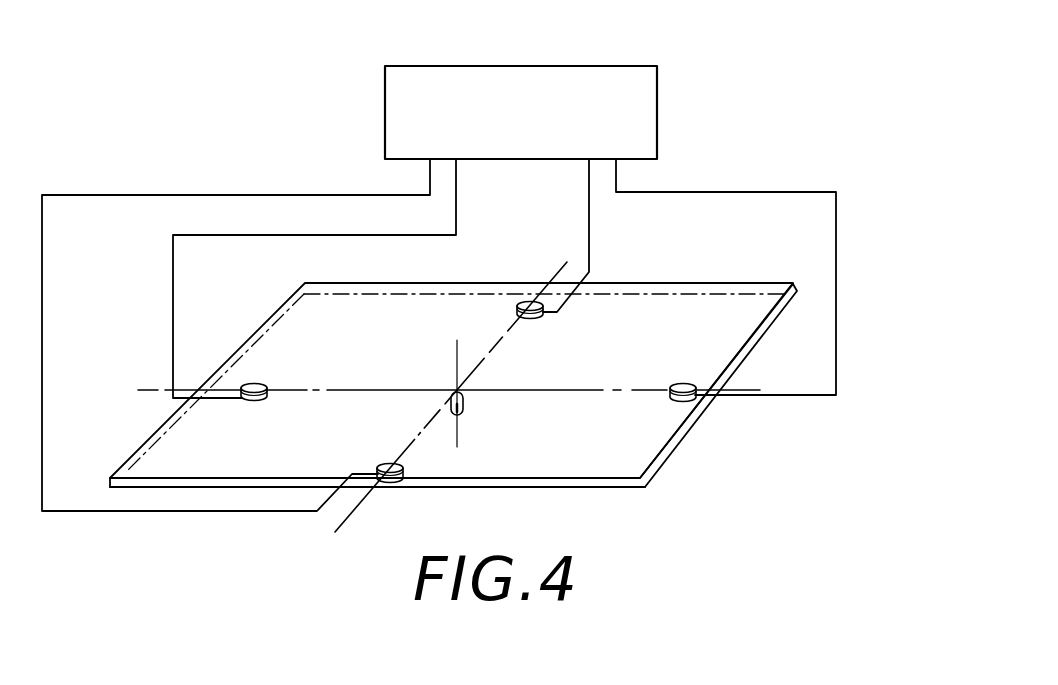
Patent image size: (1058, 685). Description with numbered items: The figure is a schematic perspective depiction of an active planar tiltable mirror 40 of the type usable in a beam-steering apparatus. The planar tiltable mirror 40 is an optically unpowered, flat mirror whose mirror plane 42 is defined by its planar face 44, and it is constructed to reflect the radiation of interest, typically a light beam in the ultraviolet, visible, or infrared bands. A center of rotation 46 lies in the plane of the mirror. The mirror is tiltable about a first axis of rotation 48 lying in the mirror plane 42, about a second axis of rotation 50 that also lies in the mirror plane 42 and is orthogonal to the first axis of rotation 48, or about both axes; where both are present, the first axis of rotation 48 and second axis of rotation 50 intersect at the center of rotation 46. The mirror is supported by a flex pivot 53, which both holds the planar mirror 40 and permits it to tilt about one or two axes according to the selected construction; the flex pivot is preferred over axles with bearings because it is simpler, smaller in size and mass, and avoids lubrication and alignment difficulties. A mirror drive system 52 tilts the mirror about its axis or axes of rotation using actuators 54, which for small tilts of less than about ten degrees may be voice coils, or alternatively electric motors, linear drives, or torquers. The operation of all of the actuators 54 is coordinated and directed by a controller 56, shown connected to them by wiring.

The planar tiltable mirror 40 is at (662, 461).
The mirror plane 42 is at (624, 345).
The planar face 44 is at (734, 304).
The center of rotation 46 is at (463, 393).
The first axis of rotation 48 is at (370, 388).
The second axis of rotation 50 is at (433, 411).
The mirror drive system 52 is at (390, 487).
The flex pivot 53 is at (463, 413).
The actuators 54 is at (251, 404).
The controller 56 is at (632, 65).